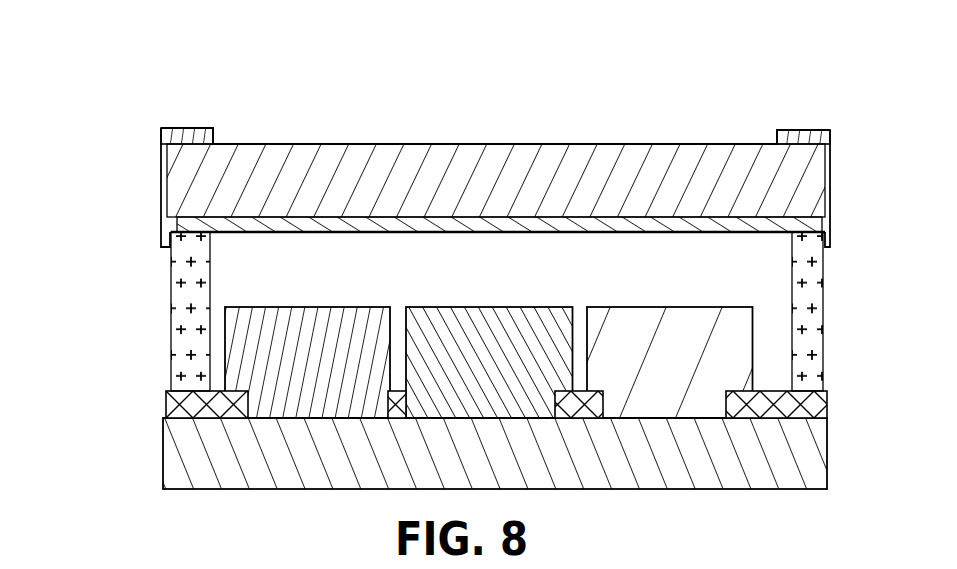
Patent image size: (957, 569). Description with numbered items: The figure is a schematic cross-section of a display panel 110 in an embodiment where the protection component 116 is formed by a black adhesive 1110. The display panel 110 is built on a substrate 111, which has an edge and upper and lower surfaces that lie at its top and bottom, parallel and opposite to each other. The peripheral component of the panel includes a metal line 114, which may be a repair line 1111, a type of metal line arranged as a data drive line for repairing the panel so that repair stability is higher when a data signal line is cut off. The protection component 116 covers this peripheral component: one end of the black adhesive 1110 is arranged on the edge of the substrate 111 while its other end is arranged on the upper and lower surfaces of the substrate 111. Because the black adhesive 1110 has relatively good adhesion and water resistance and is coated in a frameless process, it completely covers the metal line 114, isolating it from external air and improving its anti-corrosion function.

The display panel 110 is at (441, 201).
The substrate 111 is at (823, 167).
The metal line 114 is at (440, 304).
The repair line 1111 is at (190, 228).
The protection component 116 is at (441, 117).
The black adhesive 1110 is at (178, 138).